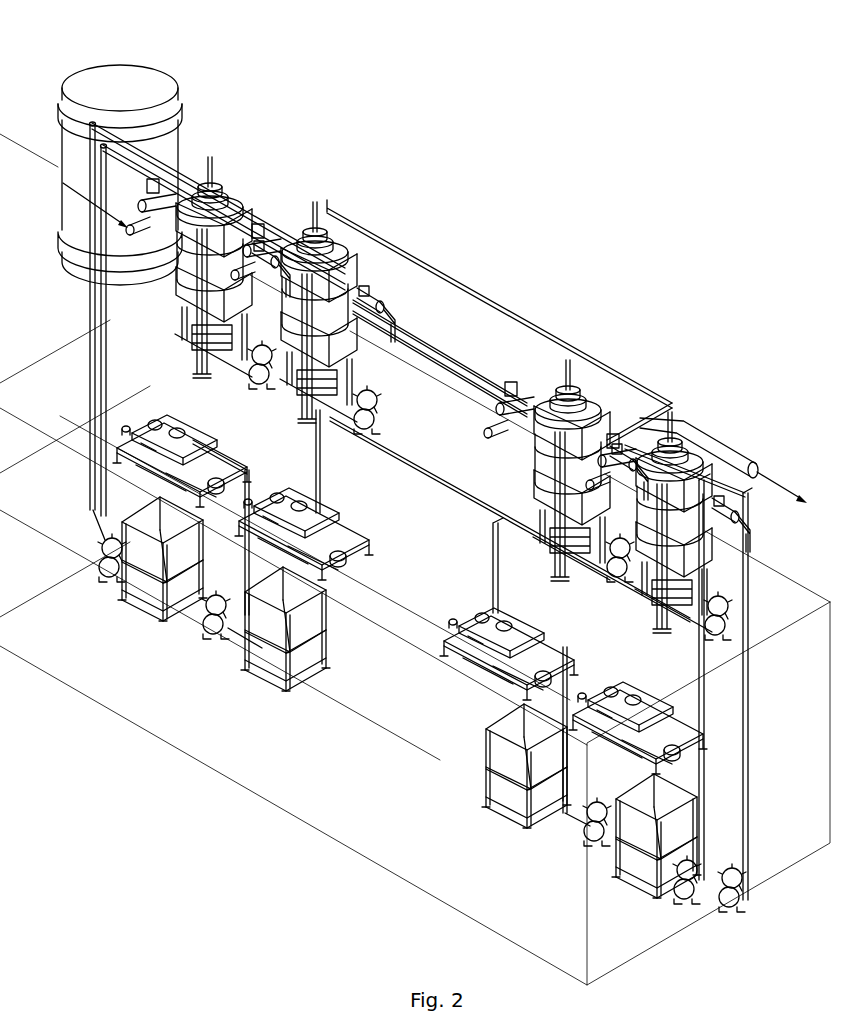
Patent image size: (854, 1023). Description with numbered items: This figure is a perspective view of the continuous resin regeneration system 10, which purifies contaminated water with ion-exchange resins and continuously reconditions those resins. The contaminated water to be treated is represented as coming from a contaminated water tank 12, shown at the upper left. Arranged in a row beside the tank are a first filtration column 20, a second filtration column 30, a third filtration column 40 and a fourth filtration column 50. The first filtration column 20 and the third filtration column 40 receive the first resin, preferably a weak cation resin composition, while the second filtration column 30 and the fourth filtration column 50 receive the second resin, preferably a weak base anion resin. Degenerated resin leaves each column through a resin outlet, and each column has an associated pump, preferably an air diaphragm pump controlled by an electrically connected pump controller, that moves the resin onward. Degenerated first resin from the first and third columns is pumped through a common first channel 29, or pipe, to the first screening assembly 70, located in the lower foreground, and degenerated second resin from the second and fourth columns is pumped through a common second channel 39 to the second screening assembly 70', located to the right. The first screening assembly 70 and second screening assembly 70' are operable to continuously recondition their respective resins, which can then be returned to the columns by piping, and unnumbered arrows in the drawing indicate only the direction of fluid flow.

The continuous resin regeneration system 10 is at (620, 193).
The contaminated water tank 12 is at (147, 82).
The first filtration column 20 is at (166, 314).
The first channel 29 is at (100, 303).
The second filtration column 30 is at (370, 268).
The second channel 39 is at (703, 723).
The third filtration column 40 is at (519, 493).
The fourth filtration column 50 is at (719, 521).
The first screening assembly 70 is at (233, 603).
The second screening assembly 70' is at (563, 770).